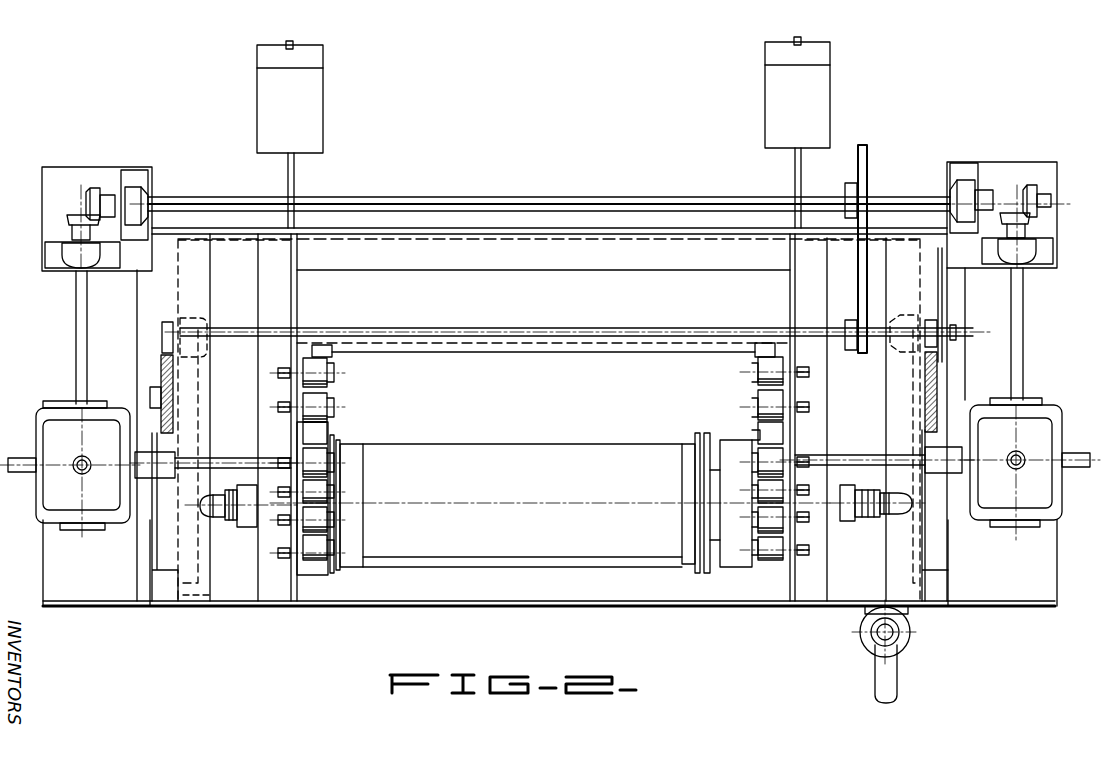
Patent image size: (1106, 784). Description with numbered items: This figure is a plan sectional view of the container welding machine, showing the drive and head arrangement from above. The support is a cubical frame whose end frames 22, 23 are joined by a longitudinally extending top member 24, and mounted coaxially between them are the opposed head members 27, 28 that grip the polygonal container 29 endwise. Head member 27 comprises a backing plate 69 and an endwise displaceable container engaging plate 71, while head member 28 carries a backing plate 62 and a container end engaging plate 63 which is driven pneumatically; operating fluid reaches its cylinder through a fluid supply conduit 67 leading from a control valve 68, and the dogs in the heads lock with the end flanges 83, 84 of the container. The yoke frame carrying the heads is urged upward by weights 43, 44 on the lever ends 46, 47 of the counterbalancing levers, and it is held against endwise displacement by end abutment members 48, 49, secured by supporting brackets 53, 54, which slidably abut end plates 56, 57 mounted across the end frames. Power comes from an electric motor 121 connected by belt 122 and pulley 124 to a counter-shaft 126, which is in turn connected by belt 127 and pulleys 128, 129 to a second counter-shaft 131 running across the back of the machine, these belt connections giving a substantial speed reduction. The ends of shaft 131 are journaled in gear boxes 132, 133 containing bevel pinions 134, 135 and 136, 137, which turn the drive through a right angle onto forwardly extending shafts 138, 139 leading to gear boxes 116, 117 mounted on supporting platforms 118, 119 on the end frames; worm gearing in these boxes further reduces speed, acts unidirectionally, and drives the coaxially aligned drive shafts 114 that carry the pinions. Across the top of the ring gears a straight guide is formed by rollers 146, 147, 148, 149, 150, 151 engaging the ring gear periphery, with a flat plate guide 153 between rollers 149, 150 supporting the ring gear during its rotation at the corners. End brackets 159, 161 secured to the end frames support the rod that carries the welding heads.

The end frame 22 is at (210, 597).
The end frame 23 is at (893, 572).
The top member 24 is at (522, 271).
The head member 27 is at (356, 443).
The head member 28 is at (684, 440).
The polygonal container 29 is at (498, 452).
The weight 43 is at (318, 119).
The weight 44 is at (826, 116).
The lever end 46 is at (294, 176).
The lever end 47 is at (795, 159).
The end abutment member 48 is at (207, 517).
The end abutment member 49 is at (898, 514).
The supporting bracket 53 is at (218, 498).
The supporting bracket 54 is at (870, 490).
The end plate 56 is at (198, 392).
The end plate / casing member 57 is at (738, 568).
The backing plate 62 is at (703, 471).
The container end engaging plate 63 is at (706, 526).
The fluid supply conduit 67 is at (862, 521).
The control valve 68 is at (905, 642).
The backing plate 69 is at (330, 572).
The container engaging plate 71 is at (340, 536).
The end flange 83 is at (352, 554).
The end flange 84 is at (688, 551).
The drive shaft 114 is at (238, 456).
The gear box 116 is at (40, 440).
The gear box 117 is at (988, 521).
The supporting platform 118 is at (99, 607).
The supporting platform 119 is at (1034, 607).
The electric motor 121 is at (222, 609).
The belt 122 is at (945, 306).
The pulley 124 is at (955, 333).
The counter-shaft 126 is at (563, 332).
The belt 127 is at (862, 264).
The pulley 128 is at (852, 351).
The pulley 129 is at (851, 183).
The second counter-shaft 131 is at (517, 196).
The gear box 132 is at (140, 170).
The gear box 133 is at (1004, 163).
The bevel pinion 134 is at (95, 195).
The bevel pinion 135 is at (68, 218).
The bevel pinion 136 is at (1038, 196).
The bevel pinion 137 is at (1036, 220).
The forwardly extending shaft 138 is at (77, 340).
The forwardly extending shaft 139 is at (1023, 363).
The roller 146 is at (775, 568).
The roller 147 is at (765, 508).
The roller 148 is at (760, 485).
The roller 149 is at (760, 449).
The roller 150 is at (758, 396).
The roller 151 is at (757, 363).
The flat plate guide 153 is at (322, 431).
The end bracket 159 is at (160, 370).
The end bracket 161 is at (940, 380).